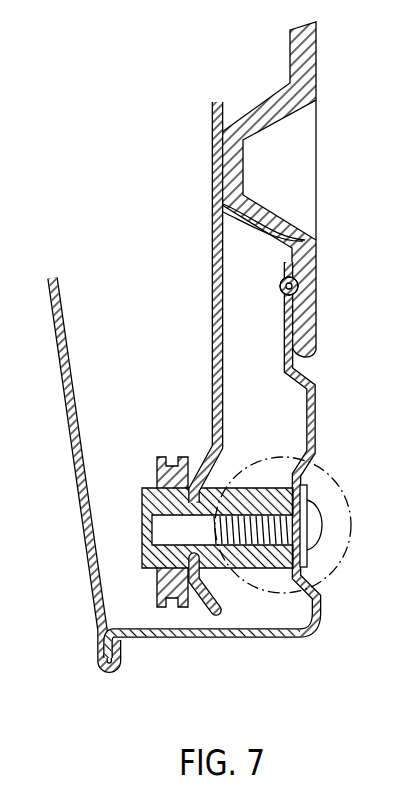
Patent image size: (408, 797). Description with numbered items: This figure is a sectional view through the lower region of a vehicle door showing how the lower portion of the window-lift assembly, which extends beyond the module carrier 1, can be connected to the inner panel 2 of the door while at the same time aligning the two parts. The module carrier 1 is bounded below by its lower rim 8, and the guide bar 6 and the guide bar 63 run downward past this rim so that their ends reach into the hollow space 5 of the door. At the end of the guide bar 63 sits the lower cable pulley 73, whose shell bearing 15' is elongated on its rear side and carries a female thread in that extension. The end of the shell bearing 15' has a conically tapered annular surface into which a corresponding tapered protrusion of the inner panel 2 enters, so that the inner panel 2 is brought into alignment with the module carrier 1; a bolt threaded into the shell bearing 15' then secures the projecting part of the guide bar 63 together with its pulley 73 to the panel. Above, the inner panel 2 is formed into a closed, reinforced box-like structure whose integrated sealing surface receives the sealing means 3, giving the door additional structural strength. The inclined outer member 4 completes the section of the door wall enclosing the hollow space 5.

The module carrier 1 is at (306, 304).
The inner panel 2 is at (318, 421).
The sealing means 3 is at (281, 280).
The inclined side wall panel 4 is at (63, 360).
The hollow space 5 is at (128, 412).
The guide bar 6 is at (222, 366).
The lower rim 8 is at (327, 366).
The shell bearing 15' is at (246, 505).
The guide bar 63 is at (231, 617).
The lower cable pulley 73 is at (157, 593).